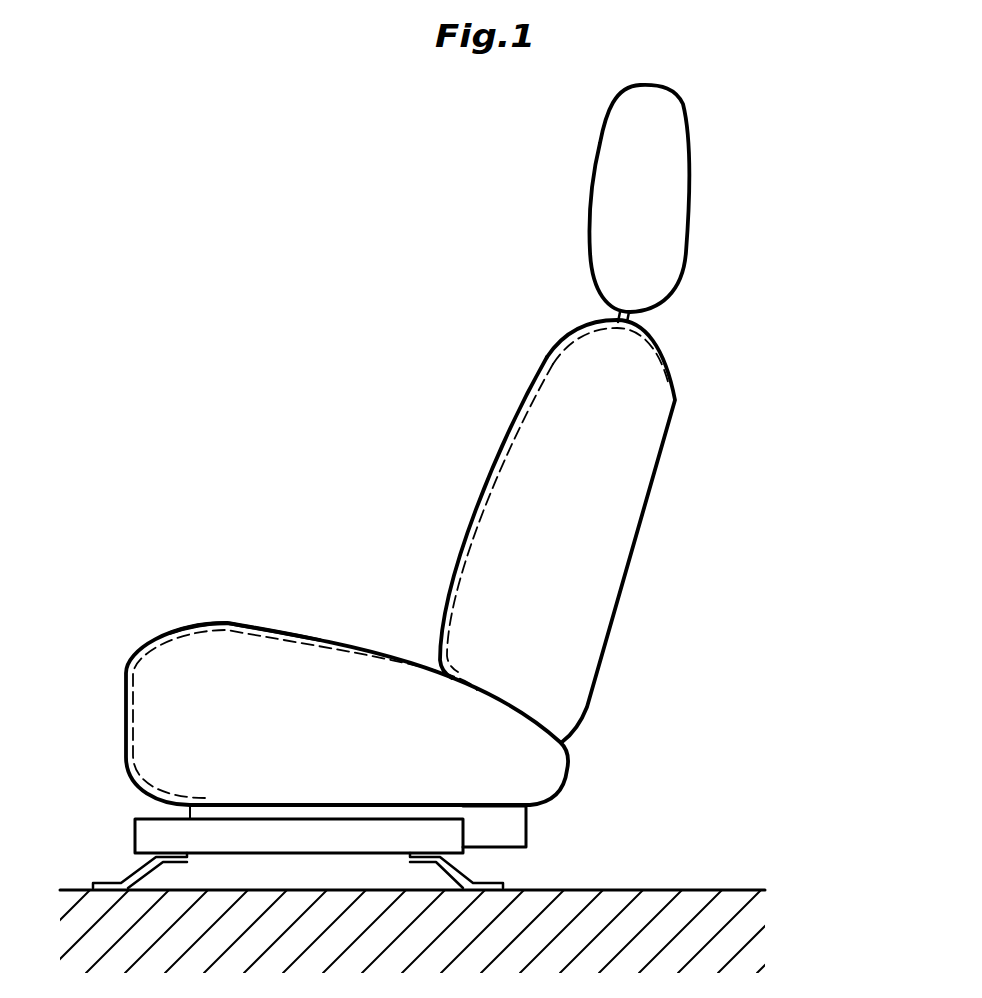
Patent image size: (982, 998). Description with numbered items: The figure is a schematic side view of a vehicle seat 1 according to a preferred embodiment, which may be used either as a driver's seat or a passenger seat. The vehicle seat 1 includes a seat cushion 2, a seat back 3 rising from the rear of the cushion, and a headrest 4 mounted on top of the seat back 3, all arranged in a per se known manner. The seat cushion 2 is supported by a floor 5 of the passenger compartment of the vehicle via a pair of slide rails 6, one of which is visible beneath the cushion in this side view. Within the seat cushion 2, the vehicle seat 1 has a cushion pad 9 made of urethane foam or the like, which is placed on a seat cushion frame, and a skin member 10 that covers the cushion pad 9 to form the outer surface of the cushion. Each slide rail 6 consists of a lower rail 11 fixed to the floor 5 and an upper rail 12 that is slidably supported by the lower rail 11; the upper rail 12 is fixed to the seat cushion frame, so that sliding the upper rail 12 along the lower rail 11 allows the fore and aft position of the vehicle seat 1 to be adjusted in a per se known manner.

The vehicle seat 1 is at (330, 363).
The seat cushion 2 is at (313, 670).
The seat back 3 is at (536, 361).
The headrest 4 is at (594, 215).
The floor 5 is at (660, 889).
The slide rail 6 is at (330, 829).
The cushion pad 9 is at (145, 685).
The skin member 10 is at (205, 628).
The lower rail 11 is at (140, 835).
The upper rail 12 is at (513, 830).